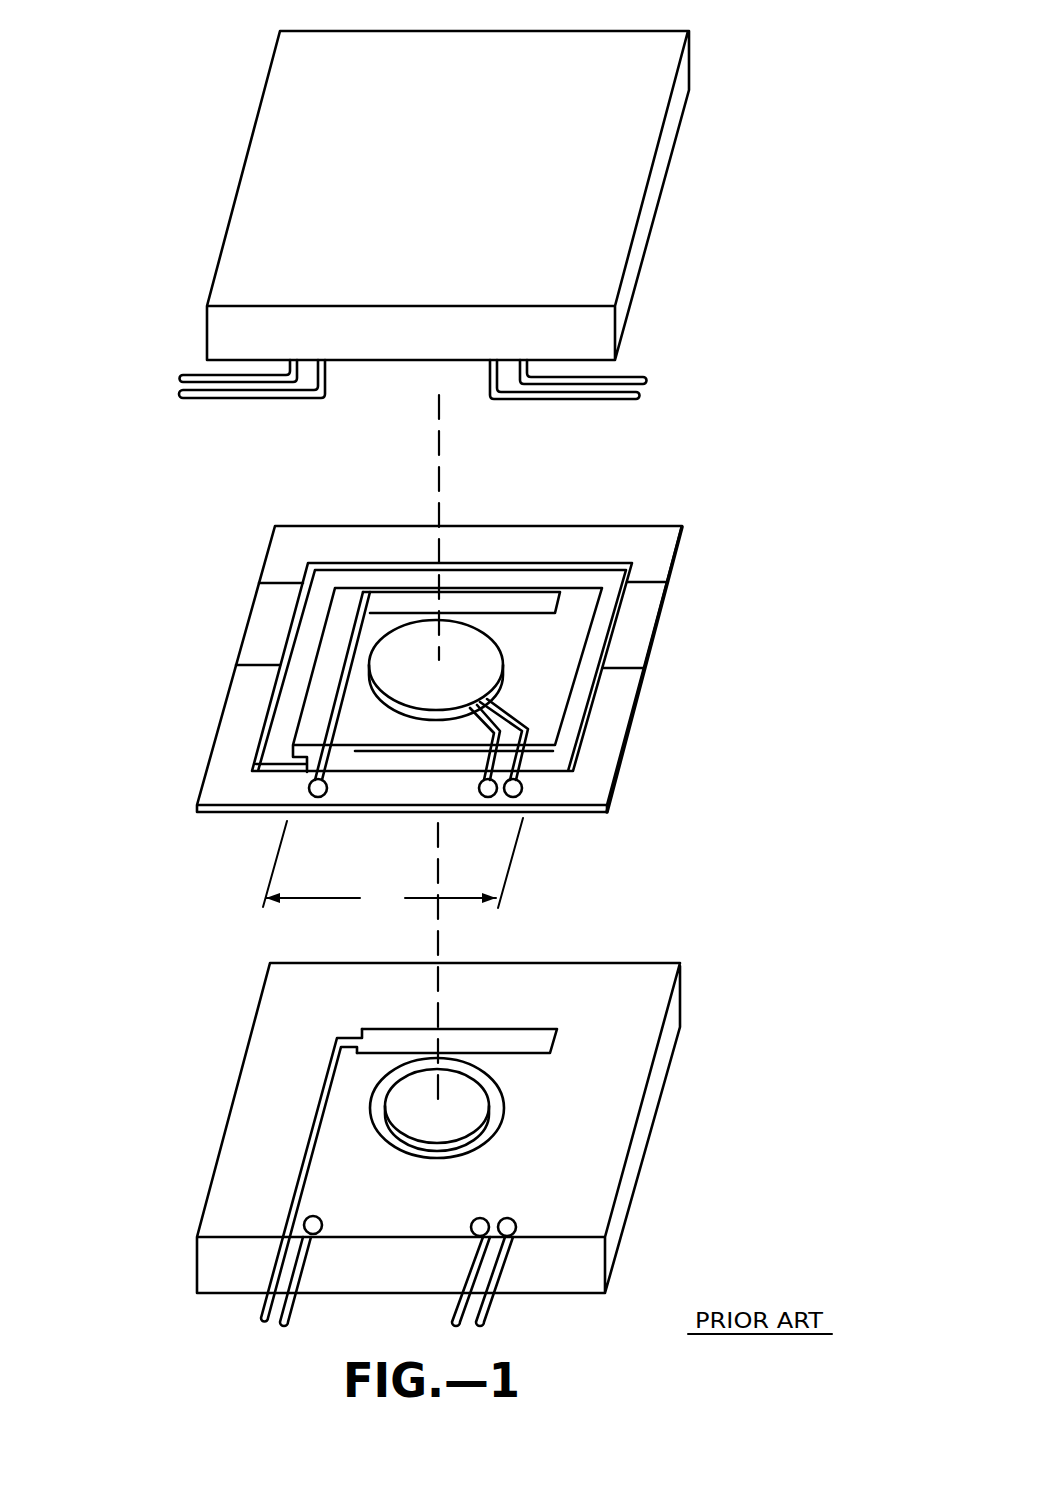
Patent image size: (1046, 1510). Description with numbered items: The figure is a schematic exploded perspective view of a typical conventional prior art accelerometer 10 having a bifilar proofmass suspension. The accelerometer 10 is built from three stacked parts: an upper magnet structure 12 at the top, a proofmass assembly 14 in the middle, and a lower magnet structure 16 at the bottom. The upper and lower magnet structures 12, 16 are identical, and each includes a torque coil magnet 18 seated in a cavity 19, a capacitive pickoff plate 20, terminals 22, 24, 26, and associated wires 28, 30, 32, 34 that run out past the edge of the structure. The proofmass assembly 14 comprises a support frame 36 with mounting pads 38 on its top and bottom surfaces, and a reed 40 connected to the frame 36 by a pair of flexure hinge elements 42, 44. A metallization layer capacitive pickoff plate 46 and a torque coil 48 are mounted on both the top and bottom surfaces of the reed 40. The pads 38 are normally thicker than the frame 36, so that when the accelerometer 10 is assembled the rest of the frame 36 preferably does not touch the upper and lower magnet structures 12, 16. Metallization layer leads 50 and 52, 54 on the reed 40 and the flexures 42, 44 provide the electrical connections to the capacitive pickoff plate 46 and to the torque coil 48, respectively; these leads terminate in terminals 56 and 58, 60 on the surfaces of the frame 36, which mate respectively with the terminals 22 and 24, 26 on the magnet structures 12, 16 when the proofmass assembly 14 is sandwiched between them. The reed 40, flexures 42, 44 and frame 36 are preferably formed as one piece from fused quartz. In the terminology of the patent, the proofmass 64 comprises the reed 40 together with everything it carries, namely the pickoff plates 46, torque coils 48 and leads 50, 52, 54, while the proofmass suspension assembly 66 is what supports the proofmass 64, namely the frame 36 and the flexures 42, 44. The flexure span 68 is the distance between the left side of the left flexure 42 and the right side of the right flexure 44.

The accelerometer 10 is at (180, 105).
The upper magnet structure 12 is at (645, 249).
The proofmass assembly 14 is at (724, 533).
The lower magnet structure 16 is at (640, 1163).
The torque coil magnet 18 is at (473, 1100).
The cavity 19 is at (493, 1128).
The capacitive pickoff plate 20 is at (517, 1038).
The terminal 22 is at (322, 1220).
The terminal 24 is at (480, 1217).
The terminal 26 is at (515, 1218).
The wire 28 is at (212, 400).
The wire 30 is at (640, 400).
The wire 32 is at (630, 378).
The wire 34 is at (193, 375).
The support frame 36 is at (617, 735).
The mounting pads 38 is at (255, 627).
The reed 40 is at (575, 636).
The flexure hinge element 42 is at (305, 760).
The flexure hinge element 44 is at (530, 778).
The metallization layer capacitive pickoff plate 46 is at (513, 600).
The torque coil 48 is at (375, 702).
The metallization layer lead 50 is at (345, 690).
The metallization layer lead 52 is at (482, 732).
The metallization layer lead 54 is at (519, 715).
The terminal 56 is at (328, 800).
The terminal 58 is at (492, 806).
The terminal 60 is at (515, 805).
The proofmass 64 is at (665, 703).
The proofmass suspension assembly 66 is at (652, 777).
The flexure span 68 is at (393, 866).